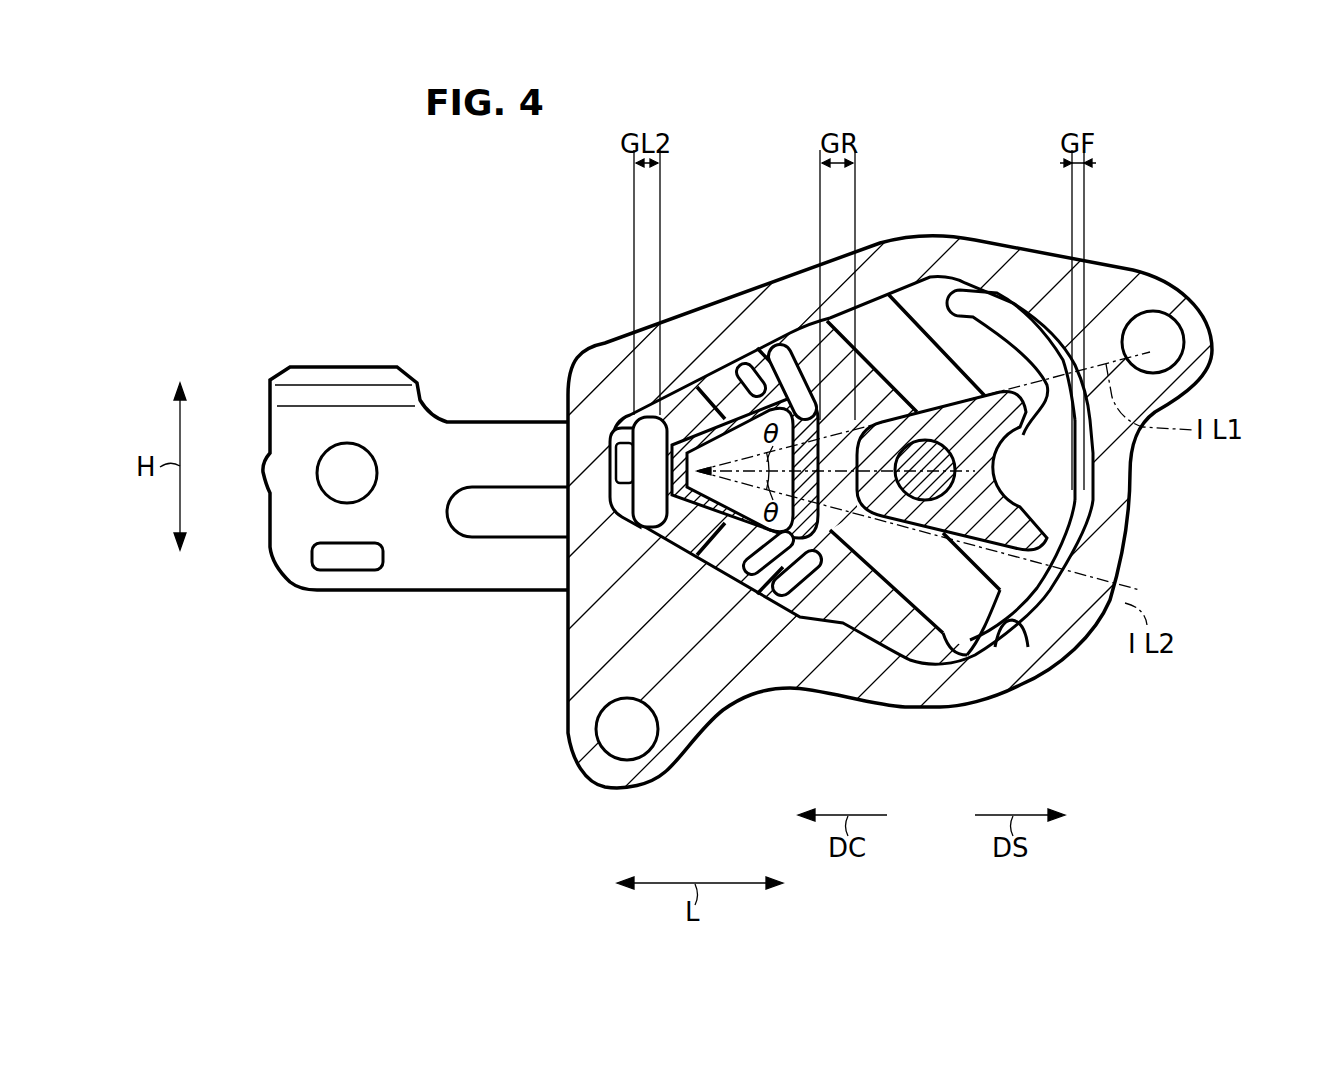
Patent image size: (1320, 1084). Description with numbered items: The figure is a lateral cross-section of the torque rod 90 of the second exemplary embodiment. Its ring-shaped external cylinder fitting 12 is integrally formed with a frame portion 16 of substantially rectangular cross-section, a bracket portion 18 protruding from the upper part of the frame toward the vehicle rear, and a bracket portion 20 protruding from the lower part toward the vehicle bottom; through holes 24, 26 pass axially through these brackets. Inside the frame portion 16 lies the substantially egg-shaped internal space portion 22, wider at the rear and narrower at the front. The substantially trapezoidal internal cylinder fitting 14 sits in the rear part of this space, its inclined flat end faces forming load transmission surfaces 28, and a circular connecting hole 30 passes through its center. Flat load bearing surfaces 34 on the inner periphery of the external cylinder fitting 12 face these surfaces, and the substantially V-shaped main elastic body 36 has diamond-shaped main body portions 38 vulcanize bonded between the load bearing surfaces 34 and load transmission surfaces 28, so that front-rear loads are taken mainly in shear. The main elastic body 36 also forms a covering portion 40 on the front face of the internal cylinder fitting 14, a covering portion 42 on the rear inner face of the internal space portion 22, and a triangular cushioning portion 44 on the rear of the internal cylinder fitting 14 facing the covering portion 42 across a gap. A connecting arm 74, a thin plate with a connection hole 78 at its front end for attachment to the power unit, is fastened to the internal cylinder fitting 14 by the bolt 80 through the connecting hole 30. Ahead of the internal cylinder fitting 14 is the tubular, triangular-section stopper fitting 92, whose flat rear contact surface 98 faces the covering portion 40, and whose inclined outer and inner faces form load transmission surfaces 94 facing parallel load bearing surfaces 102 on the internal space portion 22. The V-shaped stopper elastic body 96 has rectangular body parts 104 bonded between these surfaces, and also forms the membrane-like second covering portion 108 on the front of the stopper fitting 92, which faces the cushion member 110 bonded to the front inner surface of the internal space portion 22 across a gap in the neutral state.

The external cylinder fitting 12 is at (1128, 565).
The internal cylinder fitting 14 is at (1003, 389).
The frame portion 16 is at (957, 693).
The bracket portion 18 is at (1200, 320).
The bracket portion 20 is at (603, 775).
The internal space portion 22 is at (1004, 628).
The through hole 24 is at (1152, 352).
The through hole 26 is at (641, 729).
The load transmission surface 28 is at (918, 410).
The connecting hole 30 is at (924, 502).
The load bearing surface 34 is at (872, 318).
The main elastic body 36 is at (976, 312).
The main body portion 38 is at (884, 312).
The covering portion 40 is at (853, 523).
The covering portion 42 is at (1079, 543).
The cushioning portion 44 is at (1078, 488).
The connecting arm 74 is at (272, 380).
The connection hole 78 is at (345, 496).
The bolt 80 is at (970, 392).
The torque rod 90 is at (1178, 216).
The stopper fitting 92 is at (815, 544).
The load transmission surface 94 is at (690, 440).
The stopper elastic body 96 is at (786, 345).
The contact surface 98 is at (820, 428).
The load bearing surface 102 is at (722, 378).
The body part 104 is at (753, 372).
The second covering portion 108 is at (624, 516).
The cushion member 110 is at (613, 433).